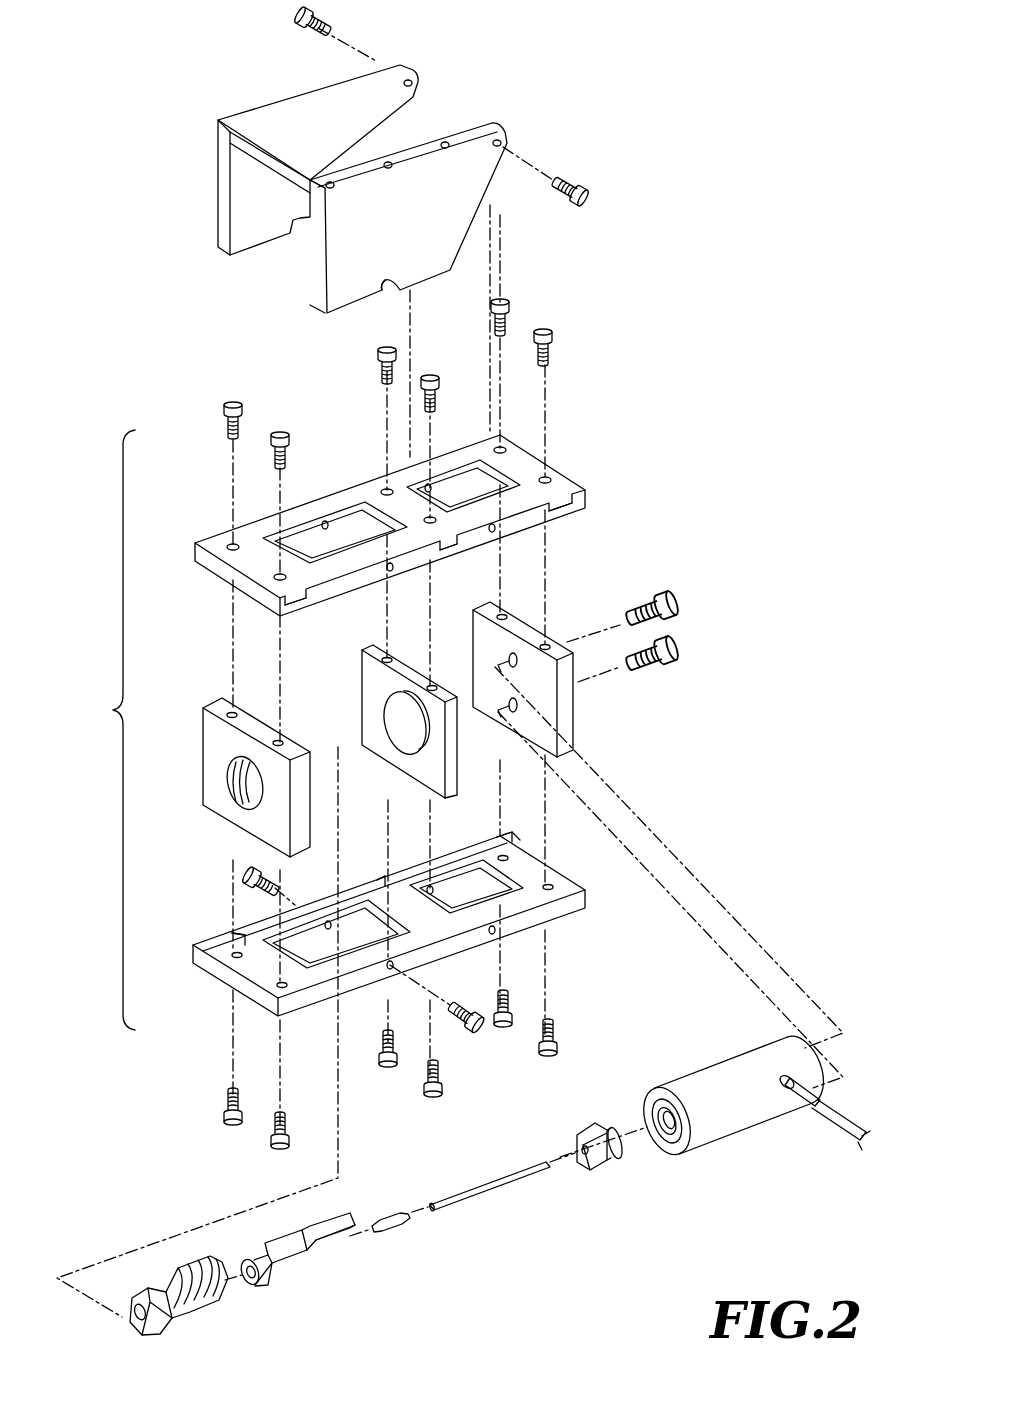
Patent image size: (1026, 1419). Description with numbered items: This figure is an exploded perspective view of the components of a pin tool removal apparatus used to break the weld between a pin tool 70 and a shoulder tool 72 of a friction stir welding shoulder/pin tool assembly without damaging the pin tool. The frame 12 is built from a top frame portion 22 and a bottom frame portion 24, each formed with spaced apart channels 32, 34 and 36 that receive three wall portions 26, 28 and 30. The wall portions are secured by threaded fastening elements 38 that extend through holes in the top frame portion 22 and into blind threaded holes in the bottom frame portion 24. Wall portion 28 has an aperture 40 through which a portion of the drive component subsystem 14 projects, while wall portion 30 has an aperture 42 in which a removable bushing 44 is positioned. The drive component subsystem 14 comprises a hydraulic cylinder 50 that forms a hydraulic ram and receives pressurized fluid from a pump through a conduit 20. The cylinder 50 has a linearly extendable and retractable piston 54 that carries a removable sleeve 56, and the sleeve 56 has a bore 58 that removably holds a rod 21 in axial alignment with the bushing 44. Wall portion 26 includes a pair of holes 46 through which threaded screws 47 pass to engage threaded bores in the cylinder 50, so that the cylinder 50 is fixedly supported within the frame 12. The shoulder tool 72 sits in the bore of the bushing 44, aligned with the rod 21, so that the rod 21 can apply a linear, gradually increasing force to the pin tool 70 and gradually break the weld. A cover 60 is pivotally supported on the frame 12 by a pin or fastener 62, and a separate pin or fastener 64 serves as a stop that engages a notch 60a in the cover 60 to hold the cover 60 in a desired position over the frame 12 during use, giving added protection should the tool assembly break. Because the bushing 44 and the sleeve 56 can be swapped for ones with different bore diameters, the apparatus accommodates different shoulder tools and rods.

The frame 12 is at (108, 730).
The drive component subsystem 14 is at (701, 1092).
The conduit 20 is at (835, 1128).
The rod 21 is at (490, 1180).
The top frame portion 22 is at (197, 543).
The bottom frame portion 24 is at (215, 975).
The wall portion 26 is at (490, 637).
The wall portion 28 is at (372, 668).
The wall portion 30 is at (215, 725).
The channel 32 is at (560, 506).
The channel 34 is at (448, 548).
The channel 36 is at (300, 602).
The threaded fastening element 38 is at (552, 334).
The aperture 40 is at (395, 723).
The aperture 42 is at (240, 785).
The bushing 44 is at (222, 1298).
The holes 46 is at (509, 706).
The threaded screws 47 is at (680, 600).
The hydraulic cylinder 50 is at (720, 1130).
The piston 54 is at (650, 1105).
The sleeve 56 is at (585, 1130).
The bore 58 is at (580, 1150).
The cover 60 is at (417, 224).
The notch 60a is at (385, 288).
The pin or fastener 62 is at (593, 187).
The pin or fastener 64 is at (482, 1035).
The pin tool 70 is at (395, 1225).
The shoulder tool 72 is at (285, 1272).